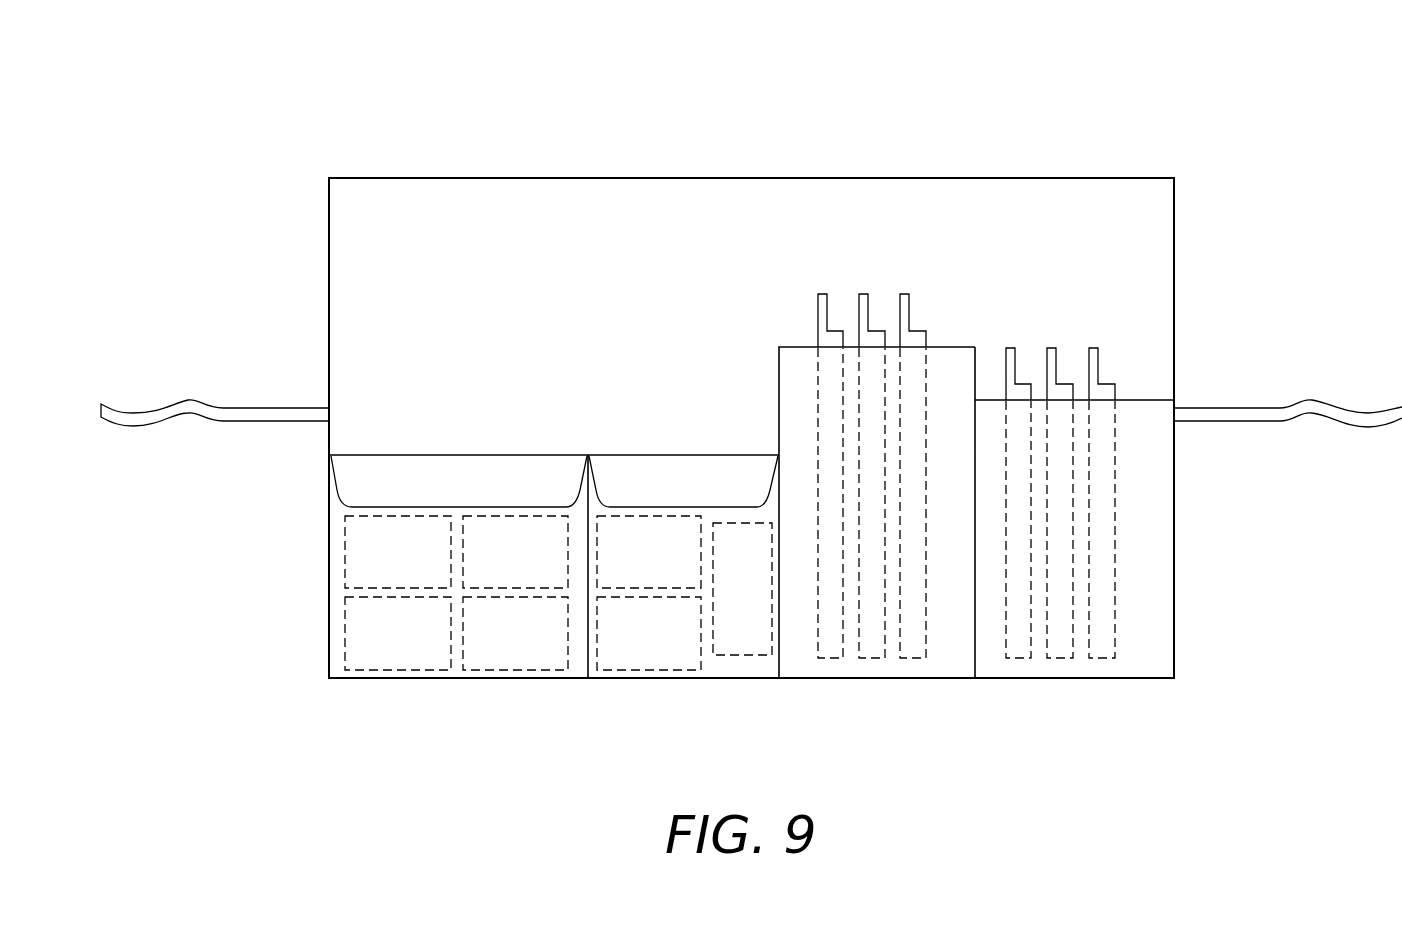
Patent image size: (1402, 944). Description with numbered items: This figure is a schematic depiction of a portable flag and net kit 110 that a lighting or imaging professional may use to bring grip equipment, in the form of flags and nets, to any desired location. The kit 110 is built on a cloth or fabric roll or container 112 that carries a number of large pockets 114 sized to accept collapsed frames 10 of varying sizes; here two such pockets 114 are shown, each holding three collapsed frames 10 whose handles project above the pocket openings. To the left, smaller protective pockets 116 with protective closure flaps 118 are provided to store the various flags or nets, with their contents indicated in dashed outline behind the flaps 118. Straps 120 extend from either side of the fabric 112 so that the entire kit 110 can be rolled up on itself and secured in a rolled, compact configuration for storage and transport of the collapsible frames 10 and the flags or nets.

The collapsed frame 10 is at (822, 338).
The portable kit 110 is at (1010, 125).
The cloth or fabric roll or container 112 is at (1145, 242).
The large pocket 114 is at (1148, 530).
The smaller protective pocket 116 is at (455, 672).
The protective closure flap 118 is at (426, 470).
The strap 120 is at (149, 408).